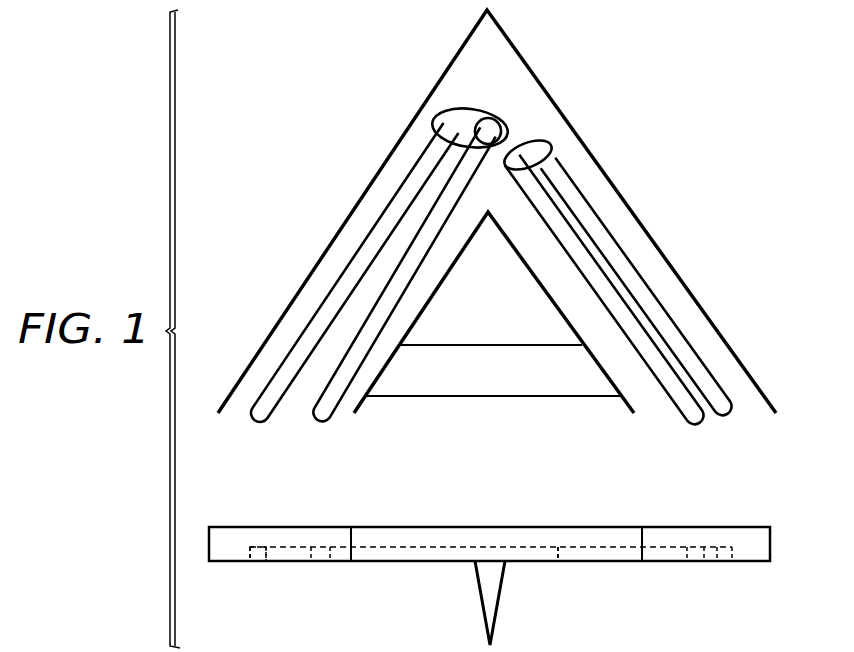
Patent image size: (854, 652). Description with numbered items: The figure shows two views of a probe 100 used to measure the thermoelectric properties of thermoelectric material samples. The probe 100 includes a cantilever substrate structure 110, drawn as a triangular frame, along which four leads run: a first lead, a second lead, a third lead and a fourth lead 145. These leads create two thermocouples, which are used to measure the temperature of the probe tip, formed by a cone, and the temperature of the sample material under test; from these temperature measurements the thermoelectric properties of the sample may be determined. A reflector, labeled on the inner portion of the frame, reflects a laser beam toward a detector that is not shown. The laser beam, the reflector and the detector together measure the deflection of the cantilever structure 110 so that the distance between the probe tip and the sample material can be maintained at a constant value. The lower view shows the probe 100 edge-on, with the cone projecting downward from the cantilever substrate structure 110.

The probe 100 is at (636, 124).
The cantilever substrate structure 110 is at (636, 210).
The fourth lead 145 is at (726, 413).